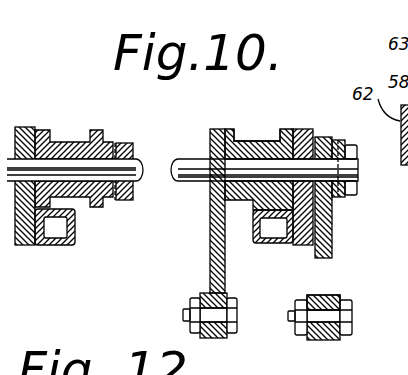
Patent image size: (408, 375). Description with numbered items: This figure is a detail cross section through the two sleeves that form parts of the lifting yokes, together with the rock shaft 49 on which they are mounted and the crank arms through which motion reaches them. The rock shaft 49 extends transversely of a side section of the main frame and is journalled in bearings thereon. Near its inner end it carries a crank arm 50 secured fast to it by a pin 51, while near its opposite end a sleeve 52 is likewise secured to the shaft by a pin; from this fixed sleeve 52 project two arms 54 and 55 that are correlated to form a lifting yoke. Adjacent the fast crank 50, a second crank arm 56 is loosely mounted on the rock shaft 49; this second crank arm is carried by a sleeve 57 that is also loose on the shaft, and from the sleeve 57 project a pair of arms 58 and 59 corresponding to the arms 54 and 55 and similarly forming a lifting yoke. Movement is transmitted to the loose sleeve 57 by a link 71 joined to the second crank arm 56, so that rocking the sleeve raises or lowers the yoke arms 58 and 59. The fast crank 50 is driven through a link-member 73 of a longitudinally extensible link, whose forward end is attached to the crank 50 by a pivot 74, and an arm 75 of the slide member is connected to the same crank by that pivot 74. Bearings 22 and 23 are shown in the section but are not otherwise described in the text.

The bearing 22 is at (259, 244).
The bearing 23 is at (58, 245).
The rock shaft 49 is at (181, 160).
The crank arm 50 is at (334, 264).
The pin 51 is at (338, 142).
The sleeve 52 is at (132, 196).
The arm 54 is at (50, 133).
The arm 55 is at (100, 133).
The second crank arm 56 is at (210, 250).
The sleeve 57 is at (258, 142).
The arm 58 is at (236, 138).
The arm 59 is at (284, 137).
The link 71 is at (200, 338).
The link-member 73 is at (312, 338).
The pivot 74 is at (346, 331).
The arm 75 is at (334, 300).